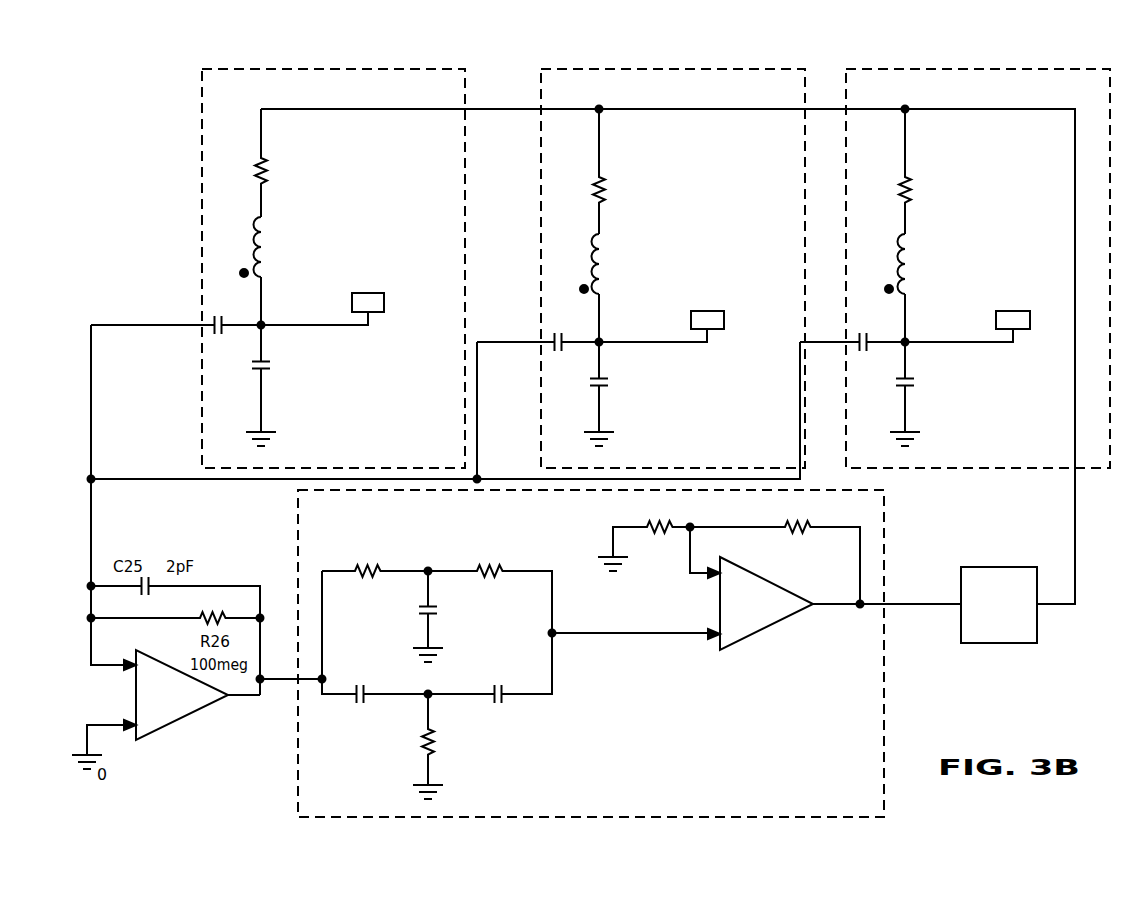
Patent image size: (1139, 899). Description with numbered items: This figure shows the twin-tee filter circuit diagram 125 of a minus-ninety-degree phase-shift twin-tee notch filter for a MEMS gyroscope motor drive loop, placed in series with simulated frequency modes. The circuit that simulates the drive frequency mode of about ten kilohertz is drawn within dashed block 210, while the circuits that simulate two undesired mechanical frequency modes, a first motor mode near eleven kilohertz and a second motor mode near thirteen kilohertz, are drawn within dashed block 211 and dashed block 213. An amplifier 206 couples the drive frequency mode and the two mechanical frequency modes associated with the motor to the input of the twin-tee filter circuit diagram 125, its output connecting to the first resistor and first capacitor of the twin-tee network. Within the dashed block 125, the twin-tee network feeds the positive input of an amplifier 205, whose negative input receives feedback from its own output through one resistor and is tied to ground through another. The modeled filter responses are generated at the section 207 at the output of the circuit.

The dashed block 210 is at (325, 69).
The dashed block 211 is at (655, 69).
The dashed block 213 is at (932, 69).
The twin-tee filter circuit diagram 125 is at (383, 817).
The amplifier 205 is at (770, 619).
The amplifier 206 is at (192, 708).
The section 207 is at (987, 643).